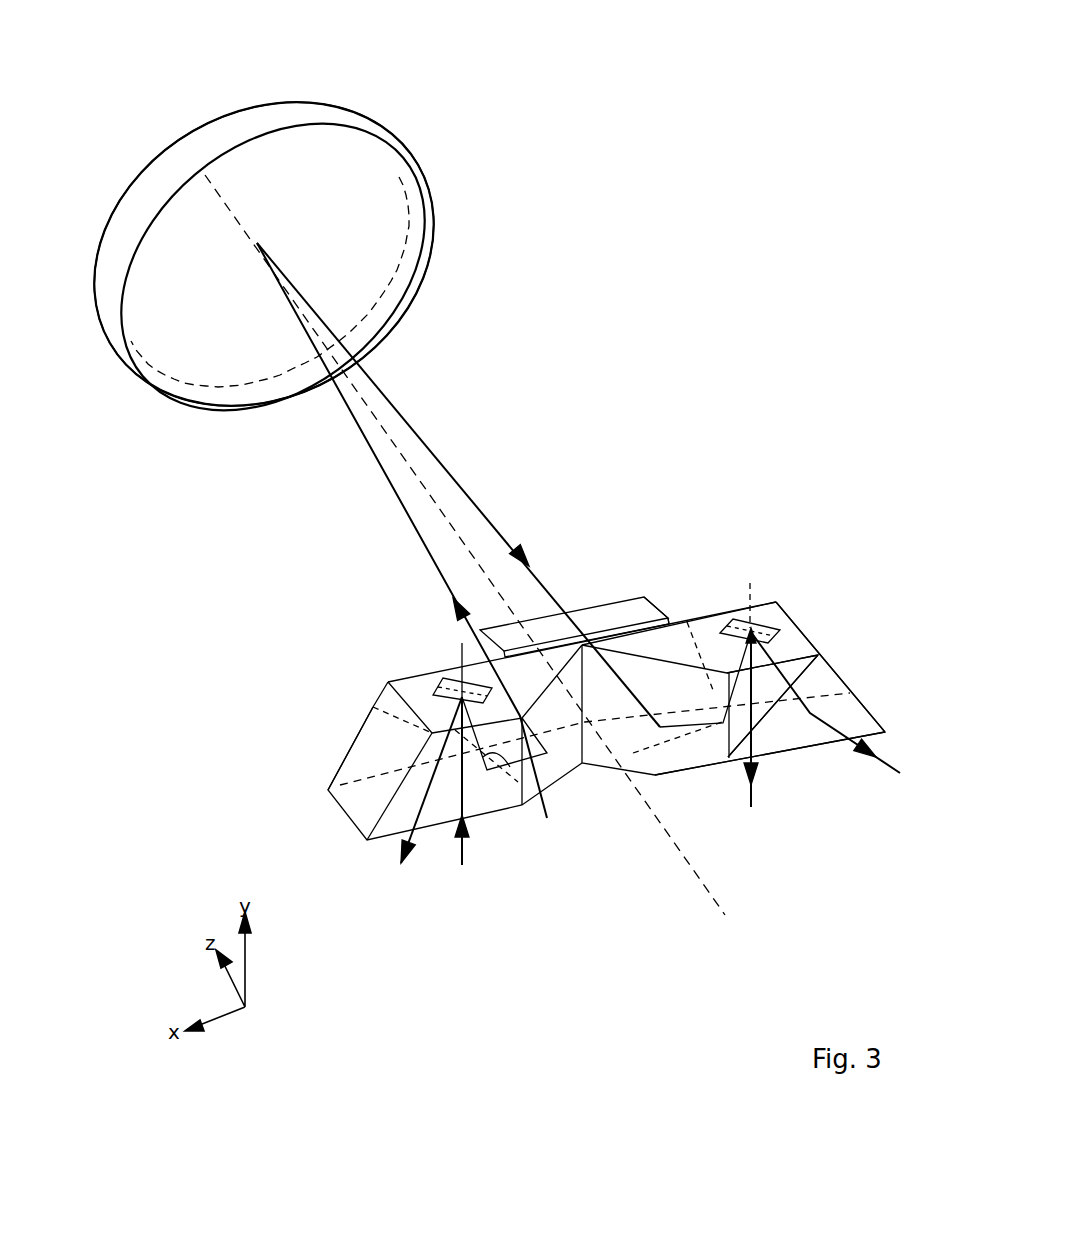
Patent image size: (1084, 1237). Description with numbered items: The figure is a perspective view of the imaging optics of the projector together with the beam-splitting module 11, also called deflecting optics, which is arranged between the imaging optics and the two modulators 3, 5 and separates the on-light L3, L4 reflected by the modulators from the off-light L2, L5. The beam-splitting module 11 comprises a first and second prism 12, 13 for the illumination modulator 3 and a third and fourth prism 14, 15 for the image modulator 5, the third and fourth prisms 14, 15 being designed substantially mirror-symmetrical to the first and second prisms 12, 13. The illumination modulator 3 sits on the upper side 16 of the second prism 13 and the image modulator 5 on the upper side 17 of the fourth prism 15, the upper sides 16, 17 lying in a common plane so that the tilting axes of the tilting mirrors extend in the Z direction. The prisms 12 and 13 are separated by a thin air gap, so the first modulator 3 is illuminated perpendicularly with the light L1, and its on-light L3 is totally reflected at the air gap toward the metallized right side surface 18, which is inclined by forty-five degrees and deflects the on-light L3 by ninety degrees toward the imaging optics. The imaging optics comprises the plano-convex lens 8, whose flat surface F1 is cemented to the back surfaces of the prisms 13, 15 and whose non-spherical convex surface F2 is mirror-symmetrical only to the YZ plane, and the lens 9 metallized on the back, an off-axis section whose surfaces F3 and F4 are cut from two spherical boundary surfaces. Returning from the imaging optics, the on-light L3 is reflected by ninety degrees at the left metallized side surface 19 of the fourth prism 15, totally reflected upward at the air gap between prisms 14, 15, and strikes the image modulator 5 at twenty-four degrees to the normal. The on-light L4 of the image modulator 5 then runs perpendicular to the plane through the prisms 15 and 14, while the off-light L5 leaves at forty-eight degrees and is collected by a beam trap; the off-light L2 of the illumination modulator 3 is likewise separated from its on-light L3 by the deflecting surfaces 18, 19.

The illumination modulator 3 is at (443, 679).
The image modulator 5 is at (768, 615).
The plano-convex lens 8 is at (652, 606).
The lens metallized on the back 9 is at (353, 123).
The beam-splitting module 11 is at (370, 669).
The first prism 12 is at (342, 765).
The second prism 13 is at (372, 709).
The third prism 14 is at (856, 696).
The fourth prism 15 is at (806, 637).
The upper side of the second prism 16 is at (450, 672).
The upper side of the fourth prism 17 is at (776, 602).
The right side surface 18 is at (583, 766).
The left metallized side surface 19 is at (690, 748).
The flat surface F1 is at (697, 620).
The convex surface F2 is at (607, 598).
The first spherical boundary surface section F3 is at (348, 203).
The second spherical boundary surface section F4 is at (247, 103).
The illumination light L1 is at (466, 850).
The off-light of the illumination modulator L2 is at (404, 870).
The on-light of the illumination modulator L3 is at (398, 500).
The on-light of the image modulator L4 is at (754, 790).
The off-light of the image modulator L5 is at (897, 773).